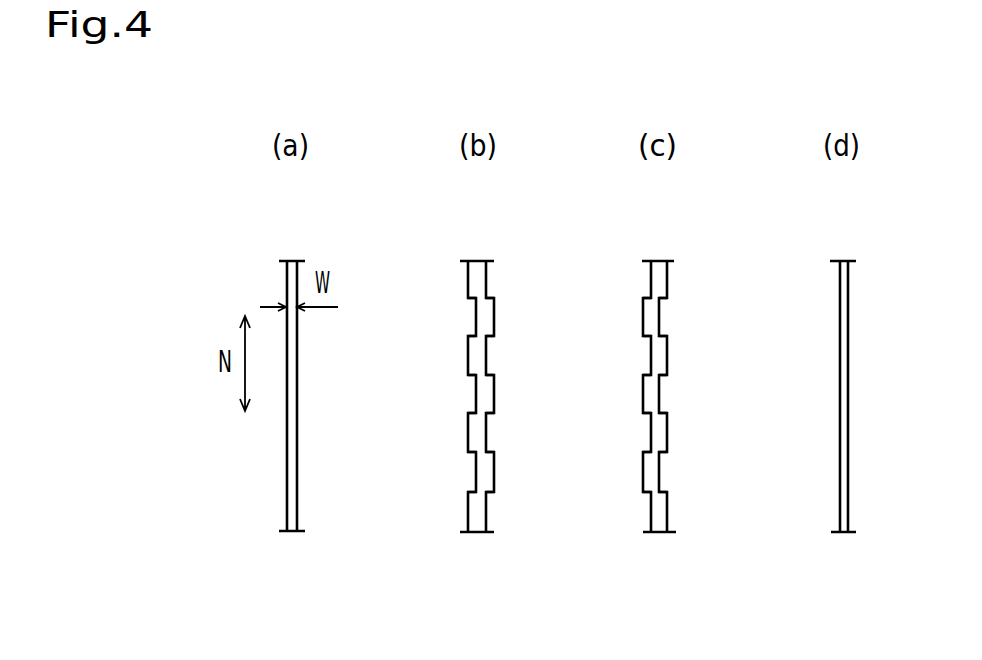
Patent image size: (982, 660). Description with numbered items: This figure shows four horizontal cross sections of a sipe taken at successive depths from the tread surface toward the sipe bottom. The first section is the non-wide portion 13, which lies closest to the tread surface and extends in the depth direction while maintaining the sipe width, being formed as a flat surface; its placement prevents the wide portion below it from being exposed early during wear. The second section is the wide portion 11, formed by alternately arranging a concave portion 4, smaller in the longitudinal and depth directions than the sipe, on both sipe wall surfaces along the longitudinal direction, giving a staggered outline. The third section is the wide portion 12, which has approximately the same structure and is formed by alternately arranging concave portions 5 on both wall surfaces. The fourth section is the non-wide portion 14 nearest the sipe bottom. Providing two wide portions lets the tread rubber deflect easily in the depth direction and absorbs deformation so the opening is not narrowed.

The concave portion 4 is at (469, 353).
The concave portion 5 is at (667, 352).
The wide portion 11 is at (478, 453).
The wide portion 12 is at (657, 453).
The non-wide portion 13 is at (281, 565).
The non-wide portion 14 is at (832, 567).